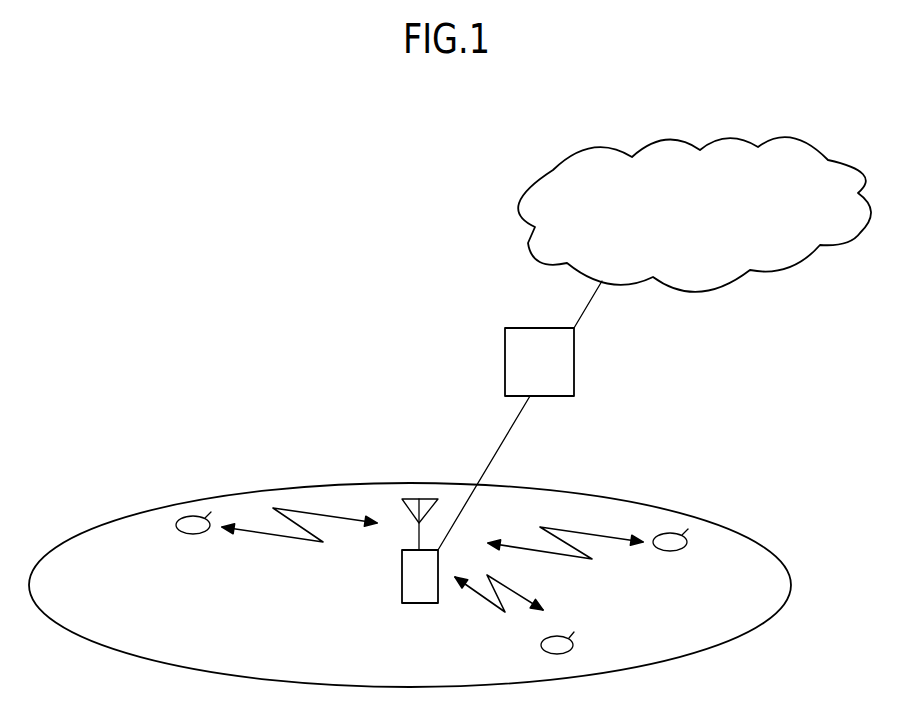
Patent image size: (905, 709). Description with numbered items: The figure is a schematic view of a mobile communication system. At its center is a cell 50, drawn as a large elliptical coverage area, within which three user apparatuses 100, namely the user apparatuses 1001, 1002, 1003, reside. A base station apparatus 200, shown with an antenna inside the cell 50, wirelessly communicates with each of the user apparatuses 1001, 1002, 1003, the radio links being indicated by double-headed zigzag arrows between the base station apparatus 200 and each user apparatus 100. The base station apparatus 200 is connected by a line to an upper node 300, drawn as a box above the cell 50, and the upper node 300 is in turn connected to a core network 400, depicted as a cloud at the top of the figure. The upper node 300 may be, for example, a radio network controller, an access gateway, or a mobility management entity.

The cell 50 is at (652, 665).
The user apparatus 100 is at (461, 587).
The user apparatus 1001 is at (190, 534).
The user apparatus 1002 is at (541, 645).
The user apparatus 1003 is at (670, 551).
The base station apparatus 200 is at (402, 580).
The upper node 300 is at (575, 358).
The core network 400 is at (735, 135).